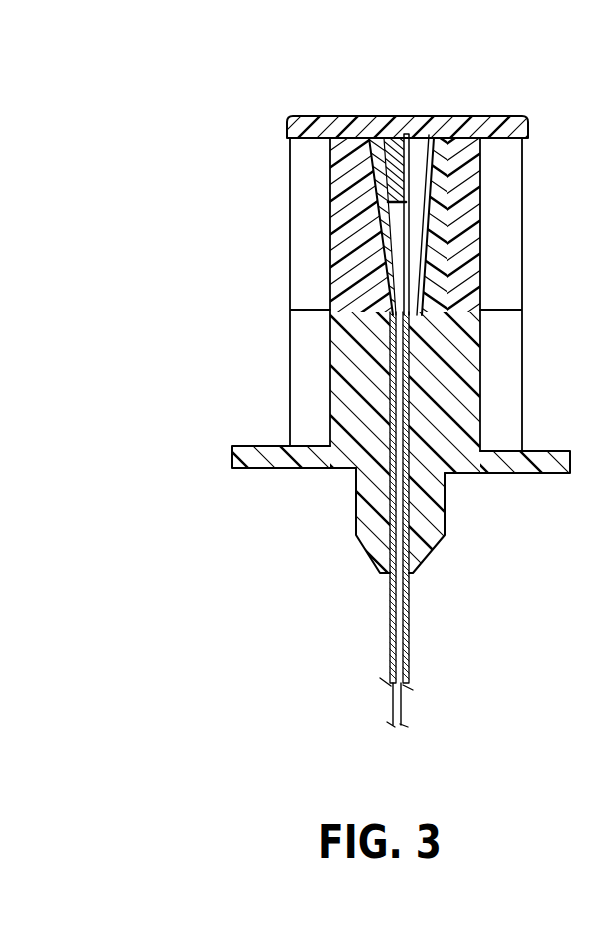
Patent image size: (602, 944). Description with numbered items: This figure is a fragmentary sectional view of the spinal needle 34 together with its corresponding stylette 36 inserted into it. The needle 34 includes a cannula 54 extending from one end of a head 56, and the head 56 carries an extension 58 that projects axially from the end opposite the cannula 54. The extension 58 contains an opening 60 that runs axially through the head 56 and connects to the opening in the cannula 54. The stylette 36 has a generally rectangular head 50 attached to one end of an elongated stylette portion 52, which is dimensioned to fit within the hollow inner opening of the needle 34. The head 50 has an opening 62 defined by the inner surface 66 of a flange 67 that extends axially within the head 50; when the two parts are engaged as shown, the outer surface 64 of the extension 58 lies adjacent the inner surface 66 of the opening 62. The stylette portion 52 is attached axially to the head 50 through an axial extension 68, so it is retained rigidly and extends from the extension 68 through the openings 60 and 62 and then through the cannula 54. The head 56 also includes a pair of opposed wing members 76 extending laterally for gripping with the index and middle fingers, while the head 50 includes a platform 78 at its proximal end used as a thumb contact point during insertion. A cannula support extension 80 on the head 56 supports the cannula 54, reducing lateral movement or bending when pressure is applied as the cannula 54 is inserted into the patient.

The needle 34 is at (250, 403).
The stylette 36 is at (252, 133).
The head 50 is at (528, 122).
The stylette portion 52 is at (393, 708).
The cannula 54 is at (408, 629).
The head 56 is at (523, 378).
The extension 58 is at (425, 272).
The opening 60 is at (409, 217).
The opening 62 is at (368, 191).
The outer surface 64 is at (355, 226).
The inner surface 66 is at (408, 136).
The flange 67 is at (470, 253).
The axial extension 68 is at (386, 182).
The wing members 76 is at (253, 458).
The platform 78 is at (391, 133).
The cannula support extension 80 is at (432, 511).